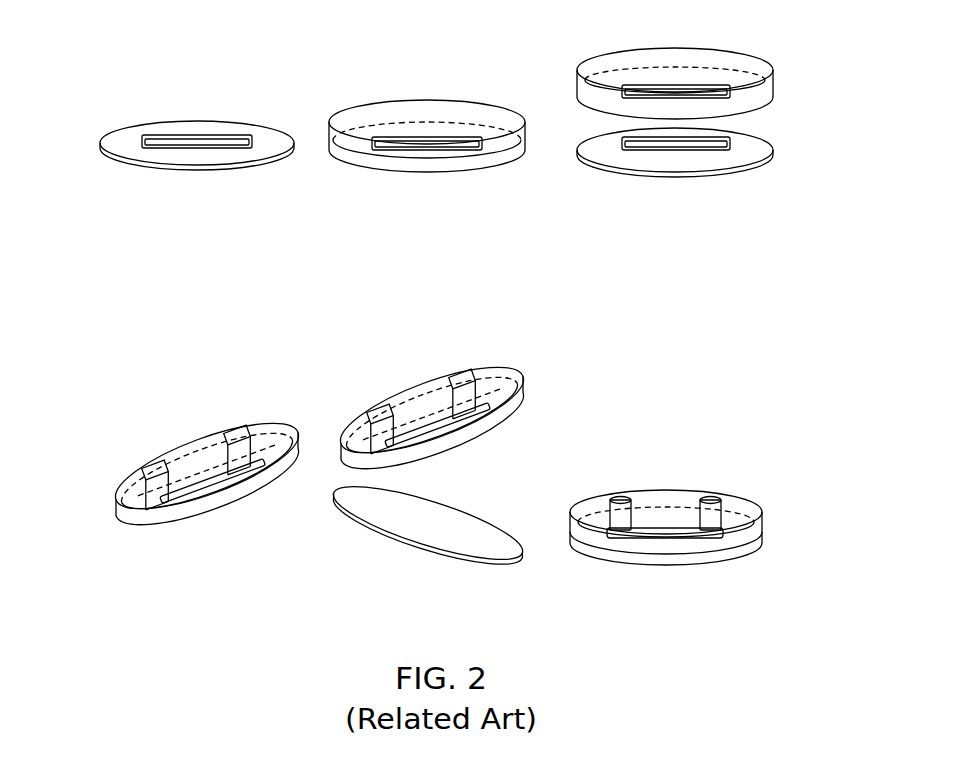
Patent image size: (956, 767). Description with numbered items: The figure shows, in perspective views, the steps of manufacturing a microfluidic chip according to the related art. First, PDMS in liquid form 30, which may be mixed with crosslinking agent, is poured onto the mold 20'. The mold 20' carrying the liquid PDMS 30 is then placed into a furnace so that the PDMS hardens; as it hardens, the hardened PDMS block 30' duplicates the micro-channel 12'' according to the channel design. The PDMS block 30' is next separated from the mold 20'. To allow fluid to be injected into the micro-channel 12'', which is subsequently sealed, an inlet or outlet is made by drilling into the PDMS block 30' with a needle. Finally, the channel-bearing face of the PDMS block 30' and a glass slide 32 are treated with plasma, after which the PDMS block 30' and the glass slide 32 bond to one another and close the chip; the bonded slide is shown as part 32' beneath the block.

The mold 20' is at (436, 157).
The PDMS in liquid form 30 is at (431, 119).
The hardened PDMS block 30' is at (442, 299).
The micro-channel 12'' is at (728, 105).
The glass slide 32 is at (435, 539).
The base plate 32' is at (694, 548).